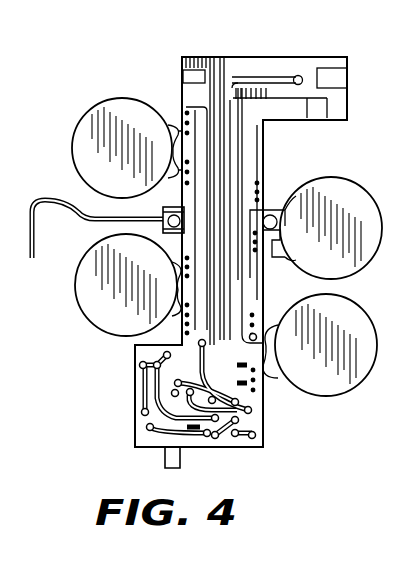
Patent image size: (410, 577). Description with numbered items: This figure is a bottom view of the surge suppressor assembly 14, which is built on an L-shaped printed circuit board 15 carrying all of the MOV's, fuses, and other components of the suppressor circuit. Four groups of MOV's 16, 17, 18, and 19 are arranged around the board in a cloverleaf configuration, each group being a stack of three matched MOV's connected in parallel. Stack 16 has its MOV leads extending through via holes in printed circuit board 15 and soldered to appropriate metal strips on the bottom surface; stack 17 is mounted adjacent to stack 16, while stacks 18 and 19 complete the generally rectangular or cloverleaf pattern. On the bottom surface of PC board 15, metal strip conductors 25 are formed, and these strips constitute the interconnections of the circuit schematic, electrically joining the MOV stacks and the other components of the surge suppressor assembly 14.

The surge suppressor assembly 14 is at (222, 50).
The L-shaped printed circuit board 15 is at (286, 66).
The MOV stack 16 is at (131, 158).
The MOV stack 17 is at (133, 297).
The MOV stack 18 is at (339, 349).
The MOV stack 19 is at (340, 239).
The metal strip conductors 25 is at (134, 430).